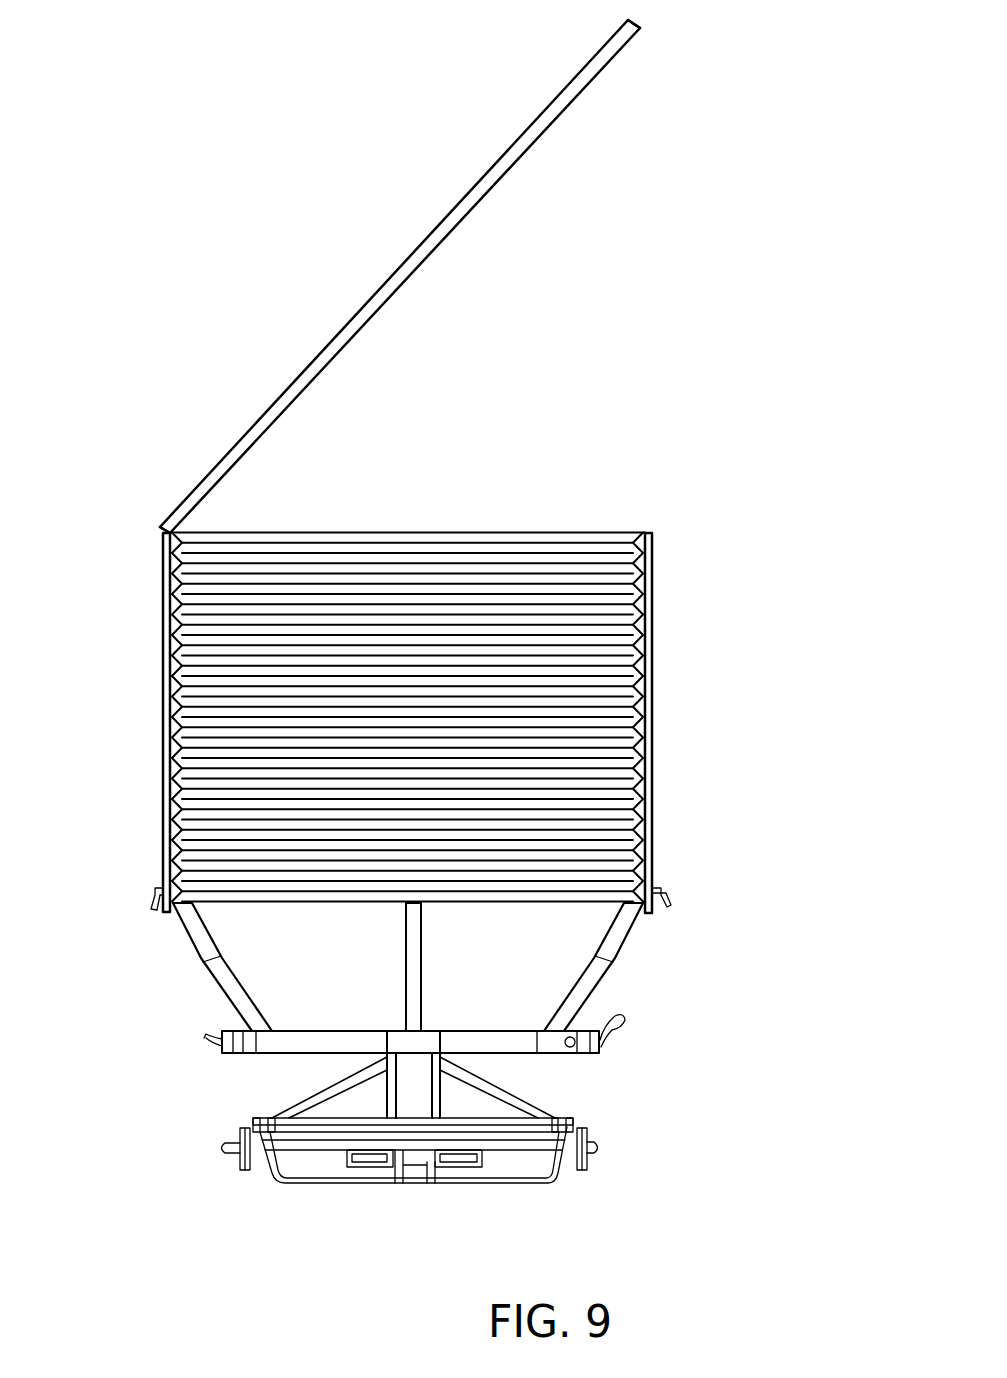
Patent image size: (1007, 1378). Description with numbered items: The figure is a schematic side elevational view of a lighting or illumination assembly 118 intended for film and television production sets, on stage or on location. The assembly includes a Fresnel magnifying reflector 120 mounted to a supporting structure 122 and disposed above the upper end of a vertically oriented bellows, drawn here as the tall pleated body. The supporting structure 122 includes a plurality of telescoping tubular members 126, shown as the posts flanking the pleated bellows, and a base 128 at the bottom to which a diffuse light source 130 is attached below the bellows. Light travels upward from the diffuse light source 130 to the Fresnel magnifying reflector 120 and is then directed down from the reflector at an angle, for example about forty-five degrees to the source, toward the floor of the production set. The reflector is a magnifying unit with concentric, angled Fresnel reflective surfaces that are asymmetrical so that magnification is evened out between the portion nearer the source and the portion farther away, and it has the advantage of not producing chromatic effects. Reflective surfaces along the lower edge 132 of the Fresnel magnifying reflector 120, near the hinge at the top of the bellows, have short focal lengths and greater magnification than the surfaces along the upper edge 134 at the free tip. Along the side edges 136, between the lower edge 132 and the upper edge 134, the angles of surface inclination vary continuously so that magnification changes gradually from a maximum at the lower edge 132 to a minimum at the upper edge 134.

The lighting or illumination assembly 118 is at (812, 565).
The Fresnel magnifying reflector 120 is at (402, 238).
The supporting structure 122 is at (185, 927).
The telescoping tubular members 126 is at (648, 591).
The base 128 is at (96, 1101).
The diffuse light source 130 is at (313, 1147).
The lower edge 132 is at (158, 522).
The upper edge 134 is at (640, 28).
The side edges 136 is at (363, 317).